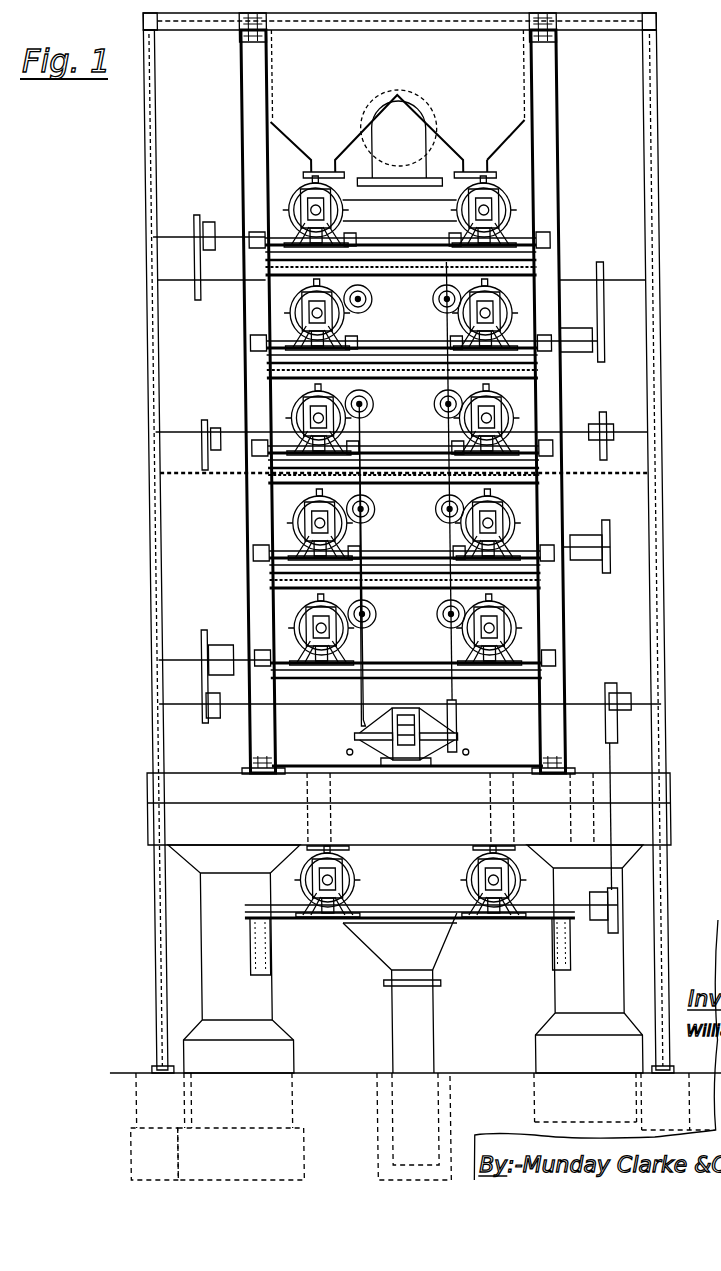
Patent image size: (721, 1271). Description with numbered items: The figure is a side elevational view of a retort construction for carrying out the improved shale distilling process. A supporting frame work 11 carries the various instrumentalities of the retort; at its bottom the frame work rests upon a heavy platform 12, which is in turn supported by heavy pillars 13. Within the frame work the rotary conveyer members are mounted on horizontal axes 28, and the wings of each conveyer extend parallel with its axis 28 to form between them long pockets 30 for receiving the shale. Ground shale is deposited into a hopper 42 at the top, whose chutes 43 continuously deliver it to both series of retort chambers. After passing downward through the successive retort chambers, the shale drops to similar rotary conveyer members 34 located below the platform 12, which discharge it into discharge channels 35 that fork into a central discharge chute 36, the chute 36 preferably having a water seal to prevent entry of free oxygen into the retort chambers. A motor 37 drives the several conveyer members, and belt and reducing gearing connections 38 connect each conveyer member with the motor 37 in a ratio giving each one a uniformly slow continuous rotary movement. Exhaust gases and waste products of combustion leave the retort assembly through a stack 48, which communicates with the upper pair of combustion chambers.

The supporting frame work 11 is at (655, 273).
The platform 12 is at (186, 813).
The pillars 13 is at (198, 898).
The horizontal axes 28 is at (360, 216).
The pockets 30 is at (314, 180).
The rotary conveyer members 34 is at (455, 871).
The discharge channels 35 is at (365, 939).
The central discharge chute 36 is at (393, 1028).
The motor 37 is at (350, 734).
The belt and reducing gearing connections 38 is at (408, 552).
The hopper 42 is at (397, 125).
The chutes 43 is at (506, 132).
The stack 48 is at (399, 138).